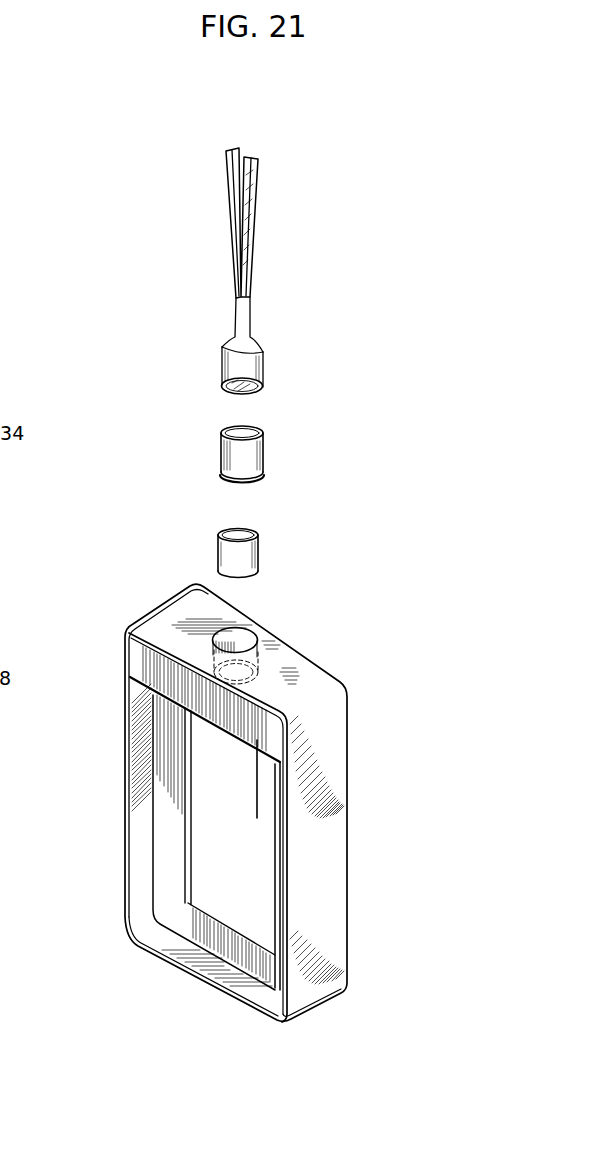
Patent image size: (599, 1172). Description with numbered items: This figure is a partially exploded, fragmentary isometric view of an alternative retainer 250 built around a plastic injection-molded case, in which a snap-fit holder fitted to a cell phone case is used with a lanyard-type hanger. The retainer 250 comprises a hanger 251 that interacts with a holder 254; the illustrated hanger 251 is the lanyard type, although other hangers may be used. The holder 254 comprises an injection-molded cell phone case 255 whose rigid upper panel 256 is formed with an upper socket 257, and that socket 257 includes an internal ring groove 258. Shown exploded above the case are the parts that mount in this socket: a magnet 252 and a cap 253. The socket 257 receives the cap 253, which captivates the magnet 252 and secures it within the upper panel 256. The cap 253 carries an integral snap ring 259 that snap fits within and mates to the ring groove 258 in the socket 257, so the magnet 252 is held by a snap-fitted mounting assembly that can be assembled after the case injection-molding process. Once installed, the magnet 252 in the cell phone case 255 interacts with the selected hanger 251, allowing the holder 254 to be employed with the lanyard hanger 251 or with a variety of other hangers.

The retainer 250 is at (365, 315).
The hanger 251 is at (280, 406).
The magnet 252 is at (262, 528).
The cap 253 is at (210, 432).
The holder 254 is at (195, 448).
The cell phone case 255 is at (112, 888).
The upper panel 256 is at (257, 820).
The upper socket 257 is at (240, 643).
The ring groove 258 is at (256, 673).
The snap ring 259 is at (223, 480).